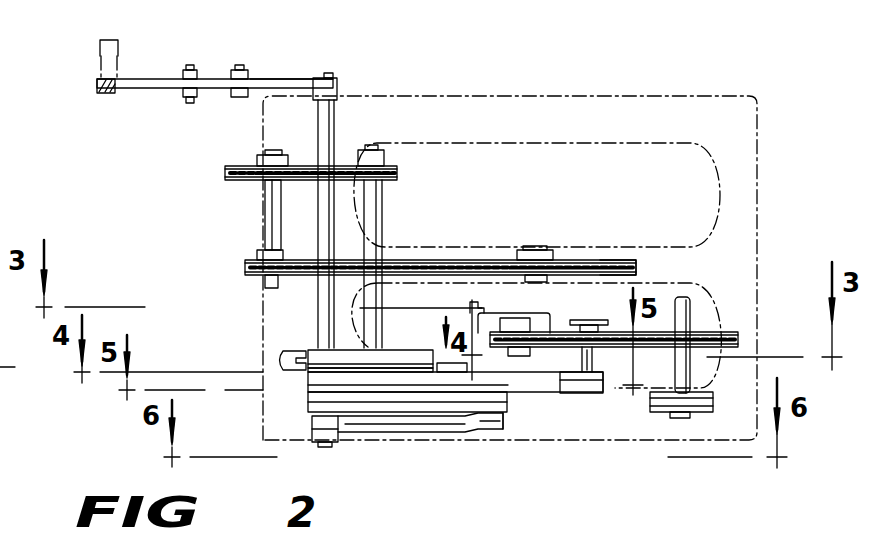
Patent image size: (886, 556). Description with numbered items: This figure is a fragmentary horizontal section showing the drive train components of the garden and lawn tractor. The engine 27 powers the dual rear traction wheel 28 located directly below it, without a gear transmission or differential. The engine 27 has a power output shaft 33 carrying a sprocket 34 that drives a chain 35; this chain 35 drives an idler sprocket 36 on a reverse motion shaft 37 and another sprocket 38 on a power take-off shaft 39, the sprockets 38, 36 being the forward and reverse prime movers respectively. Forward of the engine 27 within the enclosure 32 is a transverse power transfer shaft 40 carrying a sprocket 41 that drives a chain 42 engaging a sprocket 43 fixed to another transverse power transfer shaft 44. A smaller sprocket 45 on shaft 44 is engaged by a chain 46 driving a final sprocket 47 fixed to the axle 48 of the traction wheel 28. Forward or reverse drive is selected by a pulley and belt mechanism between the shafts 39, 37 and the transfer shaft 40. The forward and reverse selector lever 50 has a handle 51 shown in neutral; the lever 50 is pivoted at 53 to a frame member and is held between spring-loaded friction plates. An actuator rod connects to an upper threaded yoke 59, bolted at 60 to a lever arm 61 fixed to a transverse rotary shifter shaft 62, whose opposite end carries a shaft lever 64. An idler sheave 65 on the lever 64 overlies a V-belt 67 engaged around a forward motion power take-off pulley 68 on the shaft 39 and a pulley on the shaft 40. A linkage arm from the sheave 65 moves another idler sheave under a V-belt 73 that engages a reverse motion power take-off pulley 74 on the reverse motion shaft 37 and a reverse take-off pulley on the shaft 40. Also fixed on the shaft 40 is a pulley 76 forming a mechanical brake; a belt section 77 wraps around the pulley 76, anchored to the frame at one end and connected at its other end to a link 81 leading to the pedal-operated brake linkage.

The engine 27 is at (556, 304).
The dual rear traction wheel 28 is at (432, 143).
The enclosure 32 is at (556, 96).
The power output shaft 33 is at (530, 317).
The sprocket 34 is at (477, 313).
The chain 35 is at (712, 321).
The idler sprocket 36 is at (603, 348).
The reverse motion shaft 37 is at (578, 358).
The sprocket 38 is at (740, 338).
The power take-off shaft 39 is at (697, 290).
The transverse power transfer shaft 40 is at (382, 216).
The sprocket 41 is at (398, 175).
The chain 42 is at (344, 164).
The sprocket 43 is at (243, 176).
The transverse power transfer shaft 44 is at (268, 224).
The smaller sprocket 45 is at (246, 265).
The chain 46 is at (305, 276).
The final sprocket 47 is at (637, 263).
The axle 48 is at (535, 247).
The forward and reverse selector lever 50 is at (140, 88).
The handle 51 is at (122, 50).
The pivot 53 is at (187, 104).
The upper threaded yoke 59 is at (235, 96).
The bolt 60 is at (240, 71).
The lever arm 61 is at (282, 78).
The transverse rotary shifter shaft 62 is at (335, 115).
The shaft lever 64 is at (390, 432).
The idler sheave 65 is at (506, 418).
The V-belt 67 is at (310, 414).
The forward motion power take-off pulley 68 is at (704, 411).
The V-belt 73 is at (309, 385).
The reverse motion power take-off pulley 74 is at (593, 395).
The pulley 76 is at (389, 349).
The belt section 77 is at (334, 358).
The link 81 is at (283, 360).